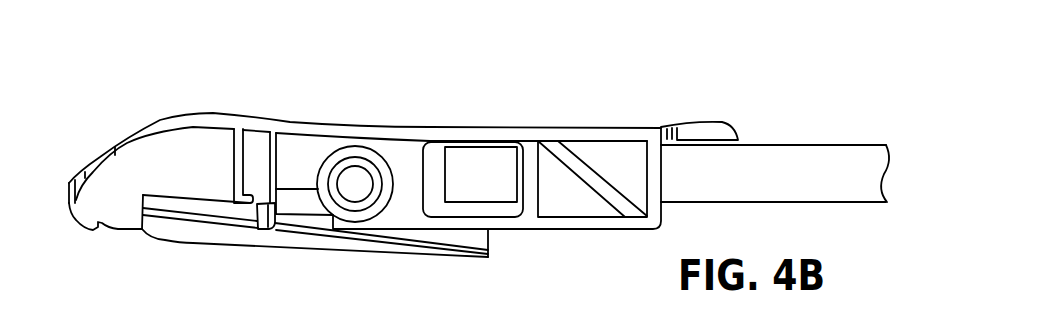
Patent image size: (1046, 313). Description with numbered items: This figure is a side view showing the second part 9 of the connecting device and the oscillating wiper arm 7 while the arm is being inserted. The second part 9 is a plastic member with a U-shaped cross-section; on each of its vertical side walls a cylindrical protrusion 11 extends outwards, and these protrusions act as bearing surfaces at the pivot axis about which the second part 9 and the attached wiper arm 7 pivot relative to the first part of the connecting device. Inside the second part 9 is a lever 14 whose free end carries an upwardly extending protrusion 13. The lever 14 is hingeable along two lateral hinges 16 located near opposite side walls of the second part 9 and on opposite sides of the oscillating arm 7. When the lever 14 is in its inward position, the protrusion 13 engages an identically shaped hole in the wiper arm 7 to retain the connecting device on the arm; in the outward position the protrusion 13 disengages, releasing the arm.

The oscillating wiper arm 7 is at (773, 165).
The second part 9 is at (293, 127).
The cylindrical protrusion 11 is at (357, 172).
The protrusion 13 is at (463, 210).
The lever 14 is at (437, 242).
The lateral hinge 16 is at (273, 230).